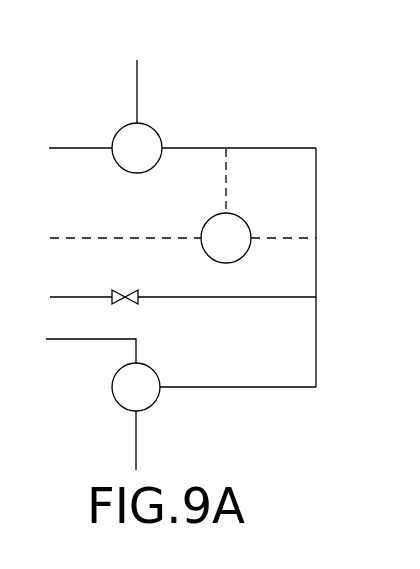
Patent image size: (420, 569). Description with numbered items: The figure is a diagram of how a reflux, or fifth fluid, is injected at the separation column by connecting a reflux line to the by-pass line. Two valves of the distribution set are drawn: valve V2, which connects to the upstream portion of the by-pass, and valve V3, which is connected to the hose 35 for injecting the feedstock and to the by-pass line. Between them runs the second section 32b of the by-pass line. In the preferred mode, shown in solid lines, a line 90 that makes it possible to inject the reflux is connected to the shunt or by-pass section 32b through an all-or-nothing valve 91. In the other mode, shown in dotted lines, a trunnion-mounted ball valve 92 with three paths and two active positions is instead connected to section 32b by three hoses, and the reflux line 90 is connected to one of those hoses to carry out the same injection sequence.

The valve V2 is at (158, 130).
The valve V3 is at (153, 367).
The second section of by-pass line 32b is at (245, 149).
The line for injecting the reflux 90 is at (80, 237).
The all-or-nothing valve 91 is at (128, 292).
The trunnion-mounted ball valve 92 is at (225, 263).
The hose for injecting the feedstock 35 is at (77, 340).